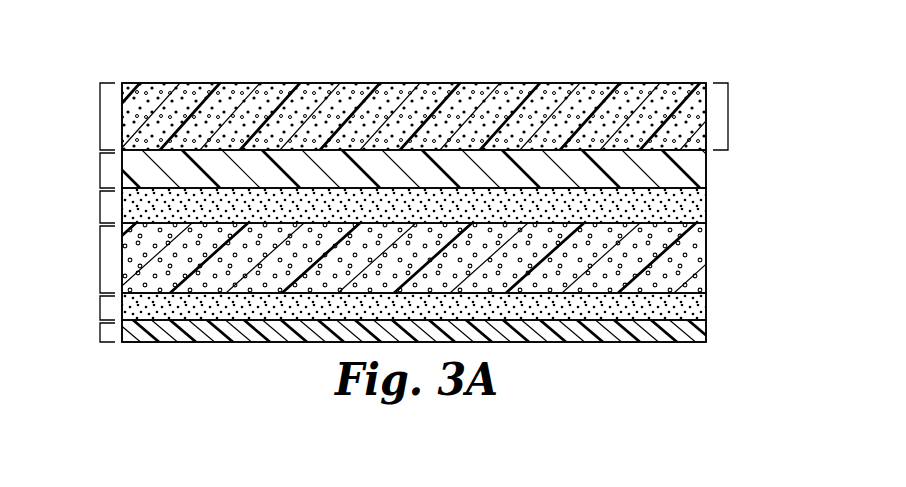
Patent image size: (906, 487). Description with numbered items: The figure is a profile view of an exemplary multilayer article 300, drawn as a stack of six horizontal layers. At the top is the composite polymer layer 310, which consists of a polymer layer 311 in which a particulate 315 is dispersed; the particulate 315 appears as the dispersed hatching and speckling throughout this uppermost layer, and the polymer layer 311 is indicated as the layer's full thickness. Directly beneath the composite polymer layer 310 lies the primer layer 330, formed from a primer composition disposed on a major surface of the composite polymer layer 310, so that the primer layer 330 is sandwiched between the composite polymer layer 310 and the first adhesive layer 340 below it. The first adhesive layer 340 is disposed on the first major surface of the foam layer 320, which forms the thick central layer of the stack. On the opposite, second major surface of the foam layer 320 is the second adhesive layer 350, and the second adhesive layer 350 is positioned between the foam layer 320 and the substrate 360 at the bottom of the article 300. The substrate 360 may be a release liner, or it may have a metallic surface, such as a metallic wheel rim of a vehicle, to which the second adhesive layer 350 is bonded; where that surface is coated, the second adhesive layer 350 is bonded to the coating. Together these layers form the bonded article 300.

The article 300 is at (682, 46).
The composite polymer layer 310 is at (100, 114).
The polymer layer 311 is at (728, 114).
The particulate 315 is at (278, 97).
The foam layer 320 is at (100, 259).
The primer layer 330 is at (100, 171).
The first adhesive layer 340 is at (100, 206).
The second adhesive layer 350 is at (100, 307).
The substrate 360 is at (100, 331).